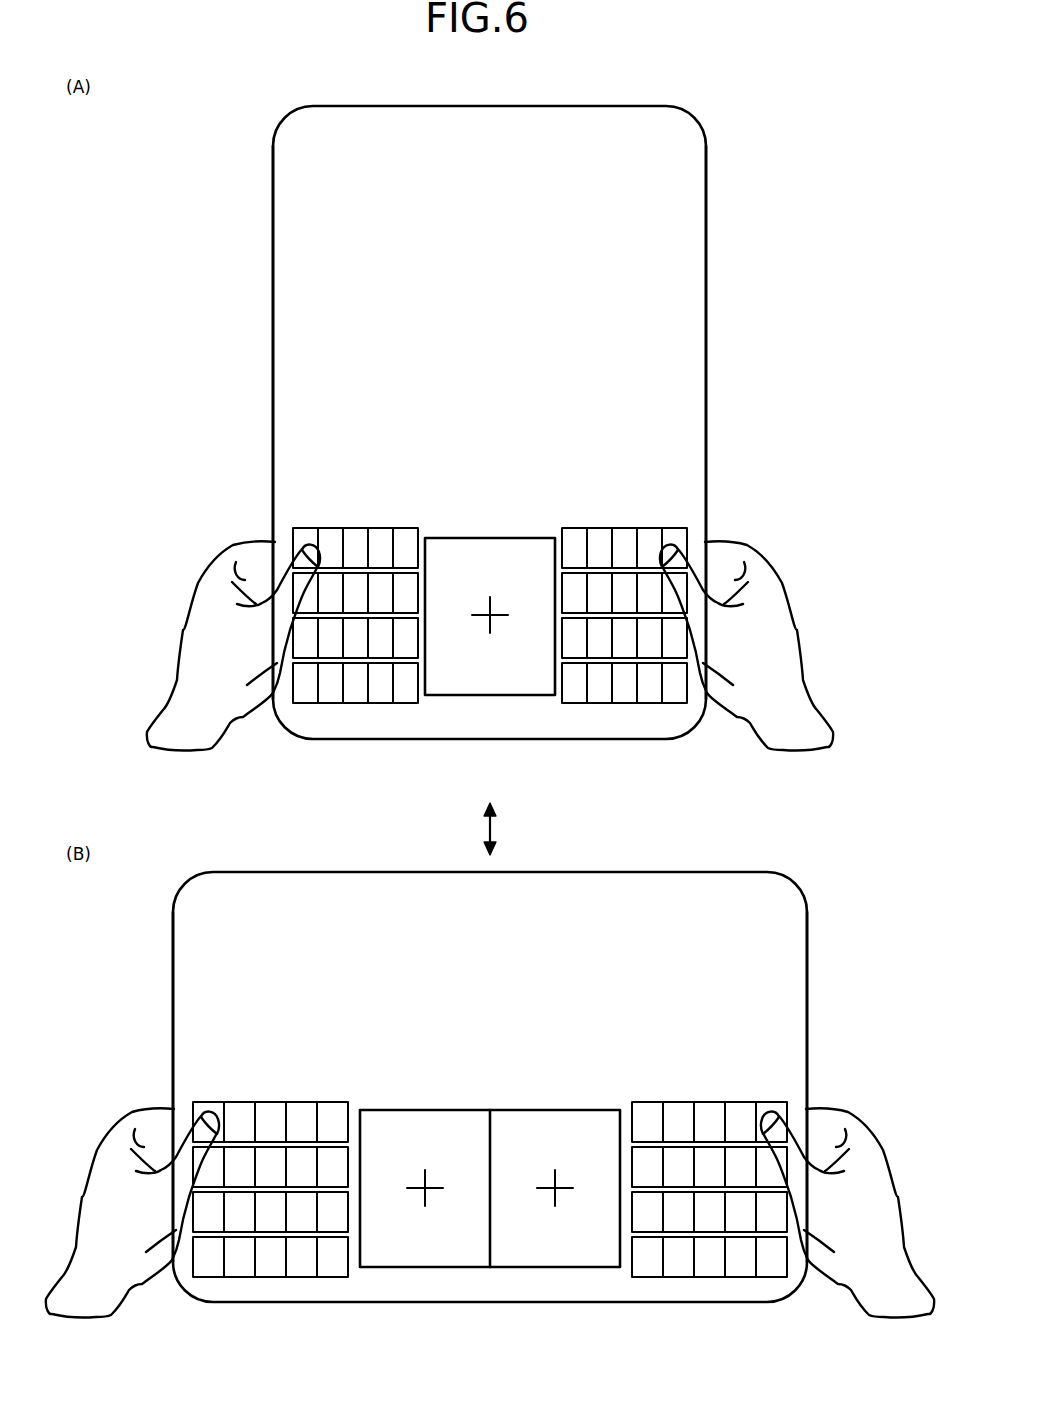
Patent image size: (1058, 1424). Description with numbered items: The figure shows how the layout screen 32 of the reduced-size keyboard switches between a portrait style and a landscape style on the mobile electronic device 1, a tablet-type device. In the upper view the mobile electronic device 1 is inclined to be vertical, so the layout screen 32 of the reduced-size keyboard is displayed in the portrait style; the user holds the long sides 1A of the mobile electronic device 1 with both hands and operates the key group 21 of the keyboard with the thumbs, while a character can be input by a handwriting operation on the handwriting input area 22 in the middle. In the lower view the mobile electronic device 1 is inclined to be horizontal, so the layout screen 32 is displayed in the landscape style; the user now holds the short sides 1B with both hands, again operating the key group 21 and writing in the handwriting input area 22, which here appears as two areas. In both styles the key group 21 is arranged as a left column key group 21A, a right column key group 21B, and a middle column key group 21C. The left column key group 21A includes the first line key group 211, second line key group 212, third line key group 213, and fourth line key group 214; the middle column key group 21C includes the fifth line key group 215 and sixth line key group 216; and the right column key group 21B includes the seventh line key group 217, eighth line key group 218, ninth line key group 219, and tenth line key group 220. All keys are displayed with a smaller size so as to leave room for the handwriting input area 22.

The mobile electronic device 1 is at (535, 704).
The long sides 1A is at (273, 347).
The short sides 1B is at (173, 1052).
The key group 21 is at (490, 884).
The left column key group 21A is at (421, 775).
The right column key group 21B is at (690, 775).
The middle column key group 21C is at (490, 775).
The first line key group 211 is at (306, 528).
The second line key group 212 is at (330, 528).
The third line key group 213 is at (355, 528).
The fourth line key group 214 is at (380, 528).
The fifth line key group 215 is at (406, 528).
The sixth line key group 216 is at (574, 528).
The seventh line key group 217 is at (599, 528).
The eighth line key group 218 is at (624, 528).
The ninth line key group 219 is at (649, 528).
The tenth line key group 220 is at (674, 528).
The handwriting input area 22 is at (487, 685).
The layout screen 32 is at (700, 698).